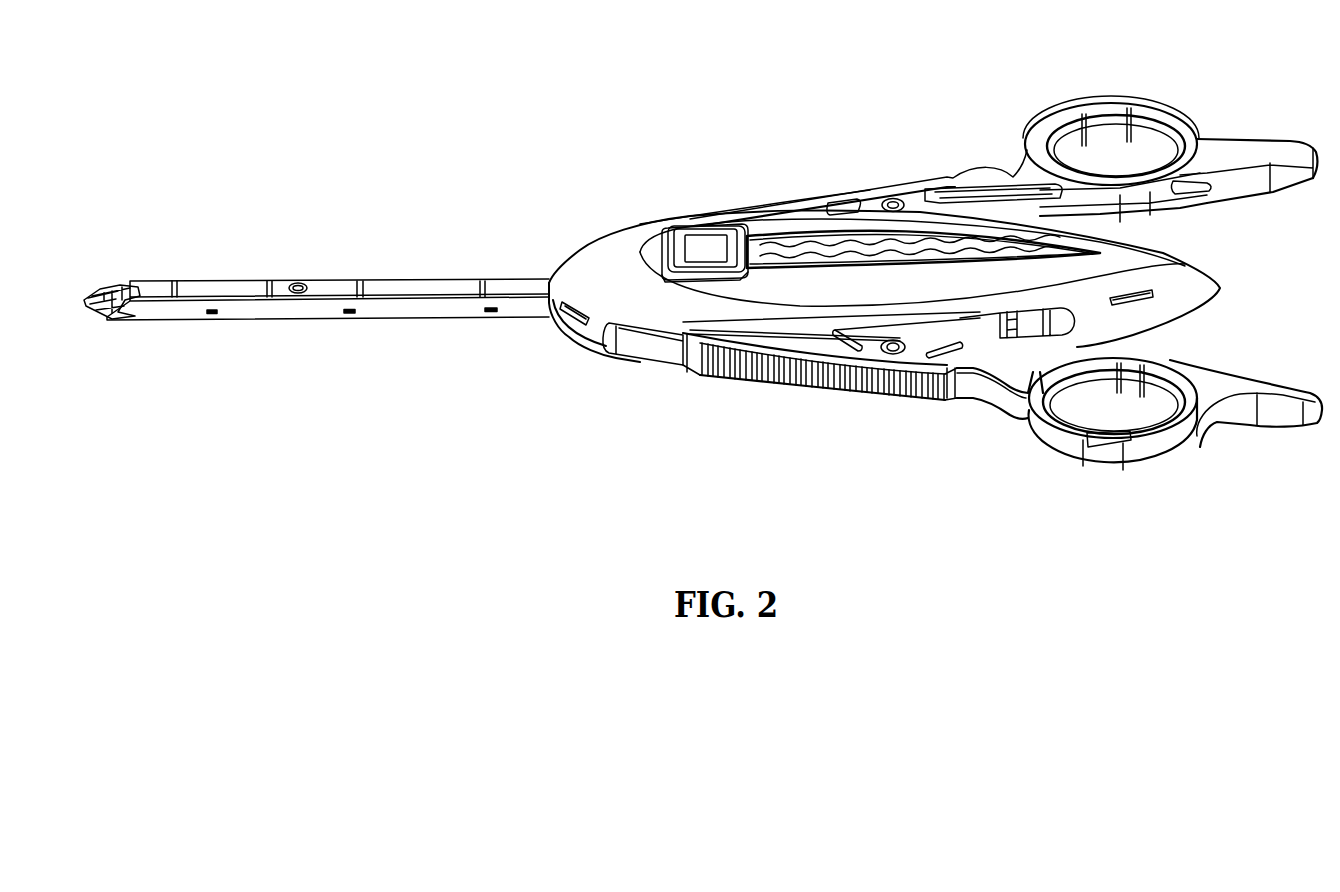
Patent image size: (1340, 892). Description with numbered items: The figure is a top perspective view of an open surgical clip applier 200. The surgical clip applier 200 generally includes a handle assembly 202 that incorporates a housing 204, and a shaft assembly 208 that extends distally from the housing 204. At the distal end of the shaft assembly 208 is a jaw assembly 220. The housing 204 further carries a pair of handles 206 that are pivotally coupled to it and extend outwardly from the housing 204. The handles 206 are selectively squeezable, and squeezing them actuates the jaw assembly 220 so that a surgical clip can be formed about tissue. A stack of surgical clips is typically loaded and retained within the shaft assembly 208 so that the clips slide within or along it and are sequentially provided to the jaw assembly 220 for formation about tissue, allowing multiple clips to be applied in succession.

The open surgical clip applier 200 is at (827, 96).
The handle assembly 202 is at (933, 171).
The housing 204 is at (1195, 278).
The handles 206 is at (1210, 157).
The shaft assembly 208 is at (433, 308).
The jaw assembly 220 is at (104, 283).